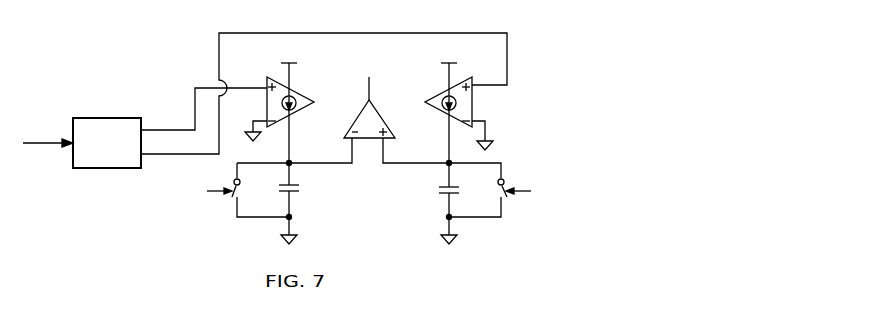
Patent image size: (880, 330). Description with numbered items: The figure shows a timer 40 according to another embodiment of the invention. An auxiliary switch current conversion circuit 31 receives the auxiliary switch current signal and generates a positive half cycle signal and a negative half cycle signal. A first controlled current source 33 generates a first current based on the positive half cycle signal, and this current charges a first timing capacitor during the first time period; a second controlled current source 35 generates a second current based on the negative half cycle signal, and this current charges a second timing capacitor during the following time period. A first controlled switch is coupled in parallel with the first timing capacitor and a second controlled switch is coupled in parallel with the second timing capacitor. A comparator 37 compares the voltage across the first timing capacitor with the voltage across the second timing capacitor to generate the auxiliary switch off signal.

The auxiliary switch current conversion circuit 31 is at (118, 117).
The first controlled current source 33 is at (296, 92).
The second controlled current source 35 is at (429, 92).
The comparator 37 is at (384, 121).
The timer 40 is at (511, 14).